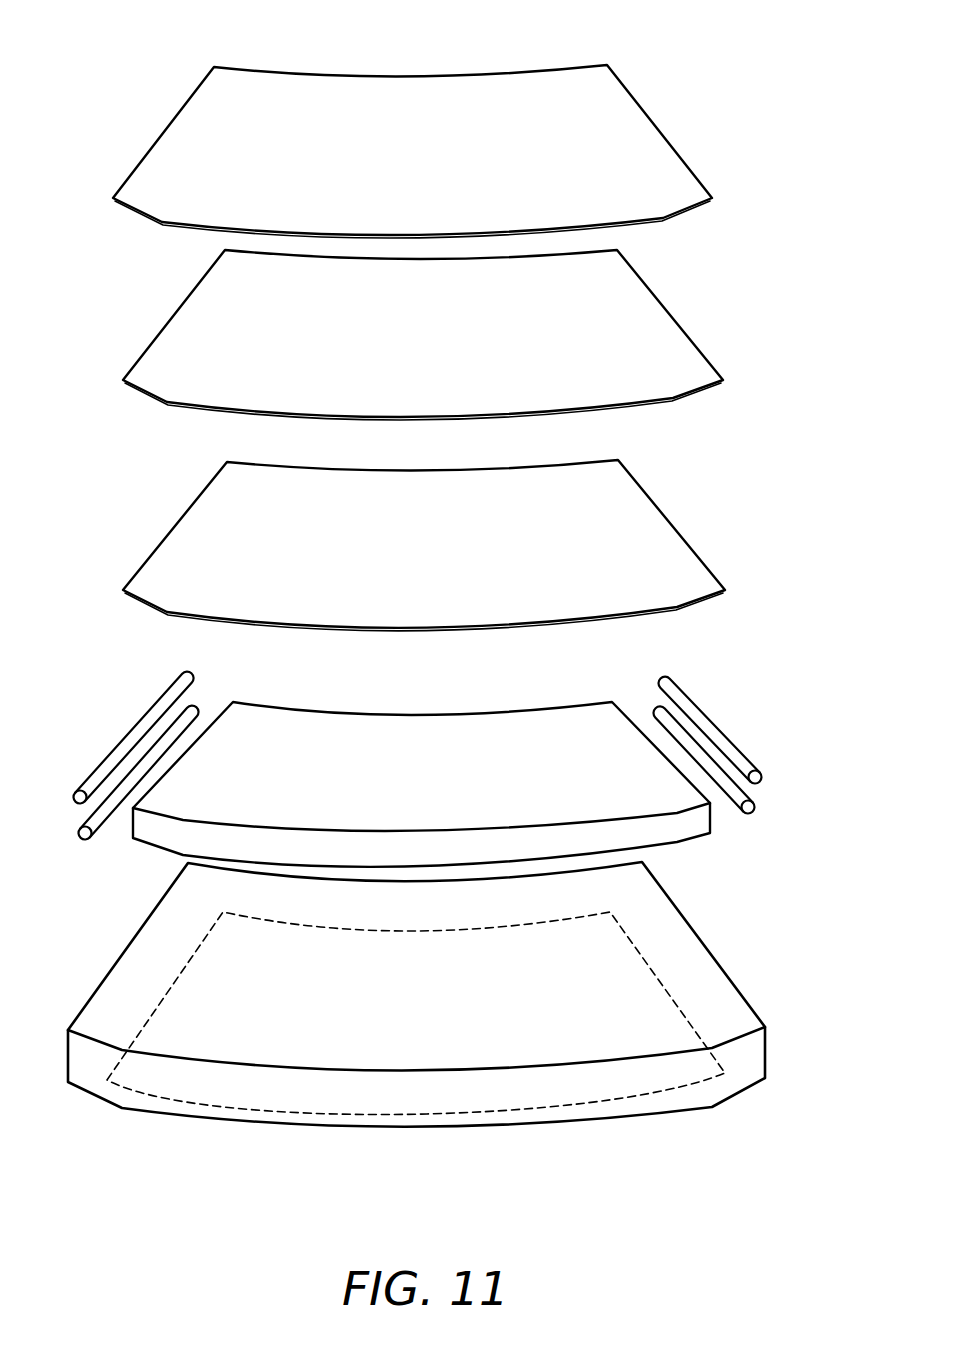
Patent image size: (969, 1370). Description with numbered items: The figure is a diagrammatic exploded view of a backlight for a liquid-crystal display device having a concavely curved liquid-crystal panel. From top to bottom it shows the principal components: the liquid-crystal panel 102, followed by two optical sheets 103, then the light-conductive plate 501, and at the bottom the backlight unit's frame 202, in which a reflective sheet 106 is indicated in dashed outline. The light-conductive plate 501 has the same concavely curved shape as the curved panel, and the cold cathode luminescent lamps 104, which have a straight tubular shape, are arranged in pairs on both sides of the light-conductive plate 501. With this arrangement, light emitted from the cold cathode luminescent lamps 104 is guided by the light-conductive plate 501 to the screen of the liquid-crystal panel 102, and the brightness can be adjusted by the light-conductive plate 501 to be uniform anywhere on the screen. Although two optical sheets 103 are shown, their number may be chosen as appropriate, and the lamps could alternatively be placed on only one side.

The liquid-crystal panel 102 is at (428, 92).
The optical sheet 103 is at (687, 363).
The cold cathode luminescent lamps 104 is at (715, 728).
The light-conductive plate 501 is at (387, 732).
The backlight unit's frame 202 is at (718, 957).
The reflective sheet 106 is at (707, 1027).